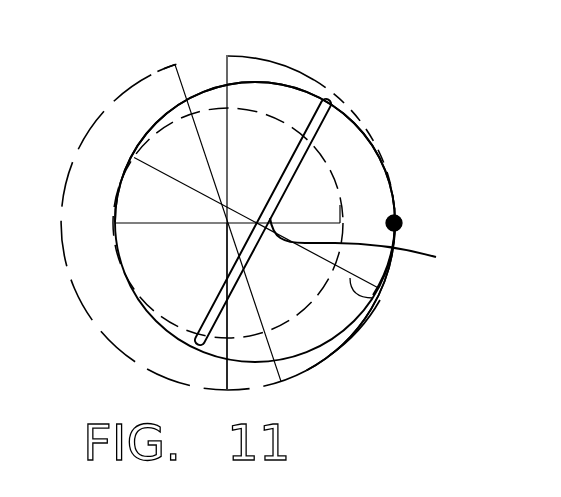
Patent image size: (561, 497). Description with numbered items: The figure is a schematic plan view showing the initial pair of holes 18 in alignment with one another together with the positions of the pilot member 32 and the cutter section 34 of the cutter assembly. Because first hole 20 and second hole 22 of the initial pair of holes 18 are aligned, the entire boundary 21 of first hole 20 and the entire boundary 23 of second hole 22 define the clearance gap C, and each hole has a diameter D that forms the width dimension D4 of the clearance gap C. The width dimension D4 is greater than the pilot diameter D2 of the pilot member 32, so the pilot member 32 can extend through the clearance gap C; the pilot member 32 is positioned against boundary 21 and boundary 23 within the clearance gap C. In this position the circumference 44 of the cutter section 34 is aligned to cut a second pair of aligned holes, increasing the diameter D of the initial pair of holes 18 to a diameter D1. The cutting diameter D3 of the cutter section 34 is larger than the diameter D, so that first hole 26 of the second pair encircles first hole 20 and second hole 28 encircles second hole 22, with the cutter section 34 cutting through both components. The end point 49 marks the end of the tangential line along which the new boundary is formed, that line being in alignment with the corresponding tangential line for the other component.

The initial pair of holes 18 is at (363, 128).
The boundary of first hole 21 is at (294, 145).
The boundary of second hole 23 is at (328, 94).
The first hole of second pair of aligned holes 26 is at (242, 214).
The second hole of second pair of aligned holes 28 is at (309, 79).
The first hole 20 is at (352, 307).
The second hole 22 is at (309, 368).
The pilot member 32 is at (340, 206).
The end point 49 is at (401, 226).
The cutter section 34 is at (363, 312).
The circumference of cutter section 44 is at (353, 336).
The clearance gap C is at (362, 246).
The diameter of initial holes D is at (373, 298).
The diameter of second pair of aligned holes D1 is at (228, 247).
The pilot diameter D2 is at (187, 222).
The cutting diameter D3 is at (208, 62).
The width dimension of clearance gap D4 is at (314, 148).